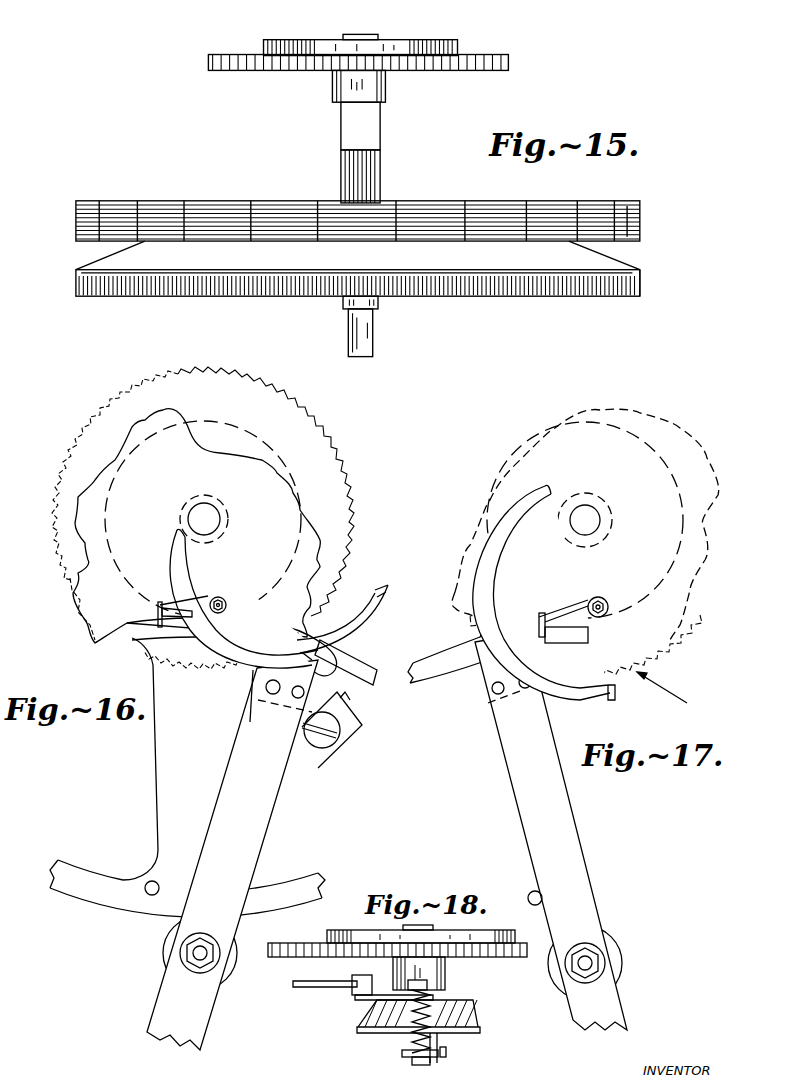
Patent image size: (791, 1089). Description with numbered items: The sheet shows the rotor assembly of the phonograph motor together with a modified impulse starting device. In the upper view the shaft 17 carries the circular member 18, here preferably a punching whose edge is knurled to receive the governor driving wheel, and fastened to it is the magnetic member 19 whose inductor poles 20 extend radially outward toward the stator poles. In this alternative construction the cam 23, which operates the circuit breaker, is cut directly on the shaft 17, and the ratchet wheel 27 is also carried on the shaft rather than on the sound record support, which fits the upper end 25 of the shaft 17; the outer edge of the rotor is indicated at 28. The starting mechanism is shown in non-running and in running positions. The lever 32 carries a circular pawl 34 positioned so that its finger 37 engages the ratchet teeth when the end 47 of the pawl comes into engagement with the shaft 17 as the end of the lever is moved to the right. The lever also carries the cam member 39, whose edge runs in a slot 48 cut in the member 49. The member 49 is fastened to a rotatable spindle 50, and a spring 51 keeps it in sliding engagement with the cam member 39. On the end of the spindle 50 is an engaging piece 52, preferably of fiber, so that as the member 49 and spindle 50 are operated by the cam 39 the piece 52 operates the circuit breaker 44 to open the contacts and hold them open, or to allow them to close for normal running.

In FIG. 15, the shaft 17 is at (352, 127).
In FIG. 16, the shaft 17 is at (222, 507).
In FIG. 17, the shaft 17 is at (600, 503).
In FIG. 15, the circular member 18 is at (522, 273).
In FIG. 15, the magnetic member 19 is at (636, 204).
In FIG. 15, the inductor poles 20 is at (215, 195).
In FIG. 15, the cam 23 is at (360, 153).
In FIG. 15, the upper end of the shaft 25 is at (330, 33).
In FIG. 15, the ratchet wheel 27 is at (483, 60).
In FIG. 15, the disk edge 28 is at (660, 283).
In FIG. 16, the lever 32 is at (247, 837).
In FIG. 17, the lever 32 is at (532, 807).
In FIG. 16, the pawl 34 is at (243, 648).
In FIG. 16, the finger 37 is at (385, 590).
In FIG. 17, the finger 37 is at (614, 698).
In FIG. 16, the cam member 39 is at (320, 650).
In FIG. 17, the cam member 39 is at (507, 633).
In FIG. 18, the cam member 39 is at (350, 982).
In FIG. 18, the circuit breaker 44 is at (444, 1058).
In FIG. 16, the end of the pawl 47 is at (178, 537).
In FIG. 17, the end of the pawl 47 is at (540, 487).
In FIG. 18, the slot 48 is at (357, 988).
In FIG. 16, the slotted member 49 is at (157, 612).
In FIG. 17, the slotted member 49 is at (592, 633).
In FIG. 18, the slotted member 49 is at (362, 998).
In FIG. 18, the rotatable spindle 50 is at (423, 1003).
In FIG. 18, the spring 51 is at (437, 1040).
In FIG. 18, the engaging piece 52 is at (403, 1057).